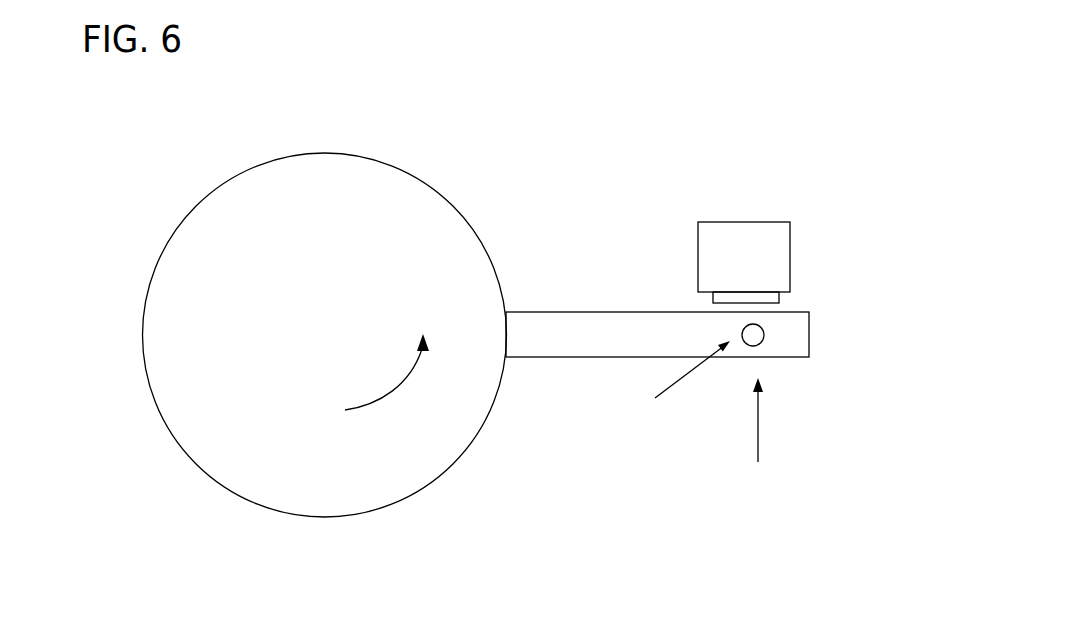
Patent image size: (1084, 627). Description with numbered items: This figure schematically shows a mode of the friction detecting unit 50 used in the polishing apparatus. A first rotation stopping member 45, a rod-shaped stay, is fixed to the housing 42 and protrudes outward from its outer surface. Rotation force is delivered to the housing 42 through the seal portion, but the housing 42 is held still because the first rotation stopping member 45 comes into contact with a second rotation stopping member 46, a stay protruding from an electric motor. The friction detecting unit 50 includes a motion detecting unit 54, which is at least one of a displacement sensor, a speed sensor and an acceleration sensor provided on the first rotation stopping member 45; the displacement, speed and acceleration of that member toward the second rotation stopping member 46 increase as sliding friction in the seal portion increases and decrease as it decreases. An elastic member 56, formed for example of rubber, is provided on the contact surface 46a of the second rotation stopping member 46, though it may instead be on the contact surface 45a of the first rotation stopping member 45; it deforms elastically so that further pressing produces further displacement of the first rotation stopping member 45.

The housing 42 is at (402, 205).
The first rotation stopping member 45 is at (798, 338).
The contact surface 45a is at (767, 313).
The second rotation stopping member 46 is at (750, 248).
The contact surface 46a is at (779, 296).
The friction detecting unit 50 is at (684, 383).
The motion detecting unit 54 is at (753, 340).
The elastic member 56 is at (713, 297).